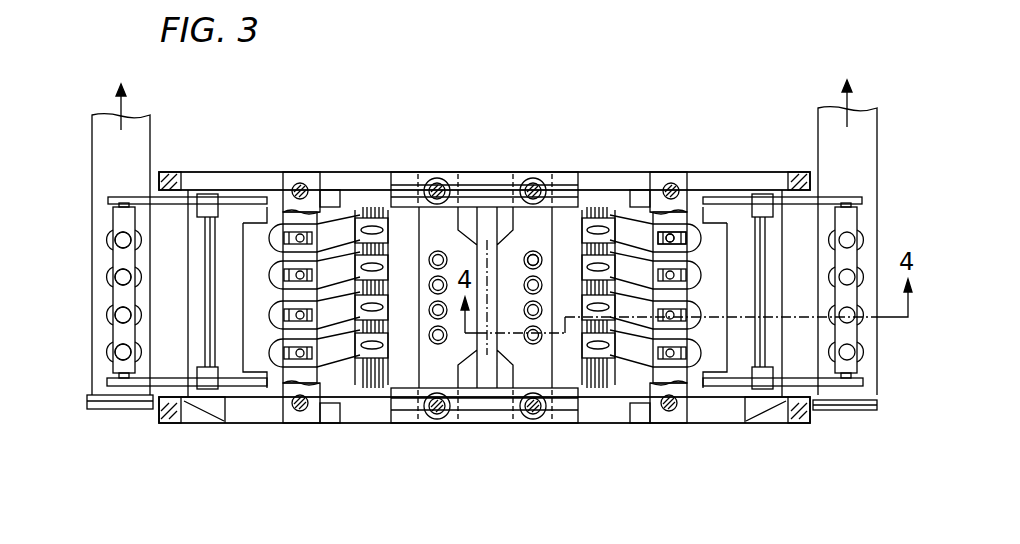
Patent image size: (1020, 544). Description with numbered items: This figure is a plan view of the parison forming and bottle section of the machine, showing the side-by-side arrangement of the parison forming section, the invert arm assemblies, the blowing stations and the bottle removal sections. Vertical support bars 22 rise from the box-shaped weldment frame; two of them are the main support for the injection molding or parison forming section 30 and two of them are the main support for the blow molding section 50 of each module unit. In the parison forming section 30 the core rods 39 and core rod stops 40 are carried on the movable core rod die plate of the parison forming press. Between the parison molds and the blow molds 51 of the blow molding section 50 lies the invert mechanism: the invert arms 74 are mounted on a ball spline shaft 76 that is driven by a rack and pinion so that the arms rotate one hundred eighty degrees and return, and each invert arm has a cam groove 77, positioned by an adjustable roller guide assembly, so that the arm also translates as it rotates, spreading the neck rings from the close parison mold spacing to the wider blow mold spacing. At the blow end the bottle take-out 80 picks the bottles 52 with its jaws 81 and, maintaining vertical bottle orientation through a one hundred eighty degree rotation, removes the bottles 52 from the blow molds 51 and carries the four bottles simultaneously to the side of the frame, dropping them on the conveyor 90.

The vertical support bars 22 is at (297, 412).
The injection molding or parison forming section 30 is at (479, 148).
The core rods 39 is at (542, 258).
The core rod stops 40 is at (538, 254).
The blow molding section 50 is at (298, 146).
The blow molds 51 is at (677, 233).
The bottles 52 is at (113, 350).
The invert arms 74 is at (327, 225).
The ball spline shaft 76 is at (390, 362).
The cam groove 77 is at (578, 382).
The bottle take-out 80 is at (232, 200).
The jaws 81 is at (113, 317).
The conveyor 90 is at (98, 156).